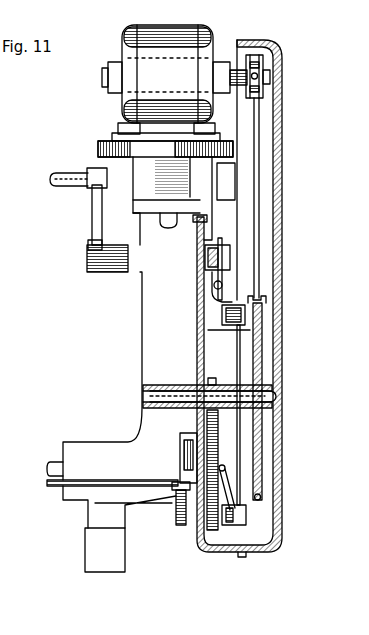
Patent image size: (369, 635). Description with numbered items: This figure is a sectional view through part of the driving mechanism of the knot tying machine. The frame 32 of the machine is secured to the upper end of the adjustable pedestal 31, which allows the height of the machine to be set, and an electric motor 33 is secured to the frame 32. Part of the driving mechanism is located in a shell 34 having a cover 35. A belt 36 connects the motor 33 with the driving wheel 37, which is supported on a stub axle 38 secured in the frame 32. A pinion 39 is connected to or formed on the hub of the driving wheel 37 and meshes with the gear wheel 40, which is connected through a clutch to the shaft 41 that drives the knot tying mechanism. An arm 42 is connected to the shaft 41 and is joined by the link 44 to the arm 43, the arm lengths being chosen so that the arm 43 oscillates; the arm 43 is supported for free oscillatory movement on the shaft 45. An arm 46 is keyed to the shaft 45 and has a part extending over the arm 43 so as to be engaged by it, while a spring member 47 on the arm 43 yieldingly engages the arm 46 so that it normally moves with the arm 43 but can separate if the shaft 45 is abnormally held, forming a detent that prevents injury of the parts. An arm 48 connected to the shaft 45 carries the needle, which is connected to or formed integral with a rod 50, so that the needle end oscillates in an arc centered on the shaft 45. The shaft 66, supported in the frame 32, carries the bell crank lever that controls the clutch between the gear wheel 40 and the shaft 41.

The adjustable pedestal 31 is at (108, 553).
The frame 32 is at (157, 338).
The electric motor 33 is at (188, 56).
The shell 34 is at (222, 187).
The cover 35 is at (262, 153).
The belt 36 is at (260, 222).
The driving wheel 37 is at (262, 450).
The stub axle 38 is at (258, 398).
The pinion 39 is at (222, 378).
The gear wheel 40 is at (206, 533).
The shaft 41 is at (58, 462).
The arm 42 is at (228, 526).
The arm 43 is at (222, 304).
The link 44 is at (237, 347).
The shaft 45 is at (88, 258).
The arm 46 is at (224, 282).
The spring member 47 is at (220, 243).
The arm 48 is at (98, 202).
The rod 50 is at (66, 173).
The shaft 66 is at (130, 480).